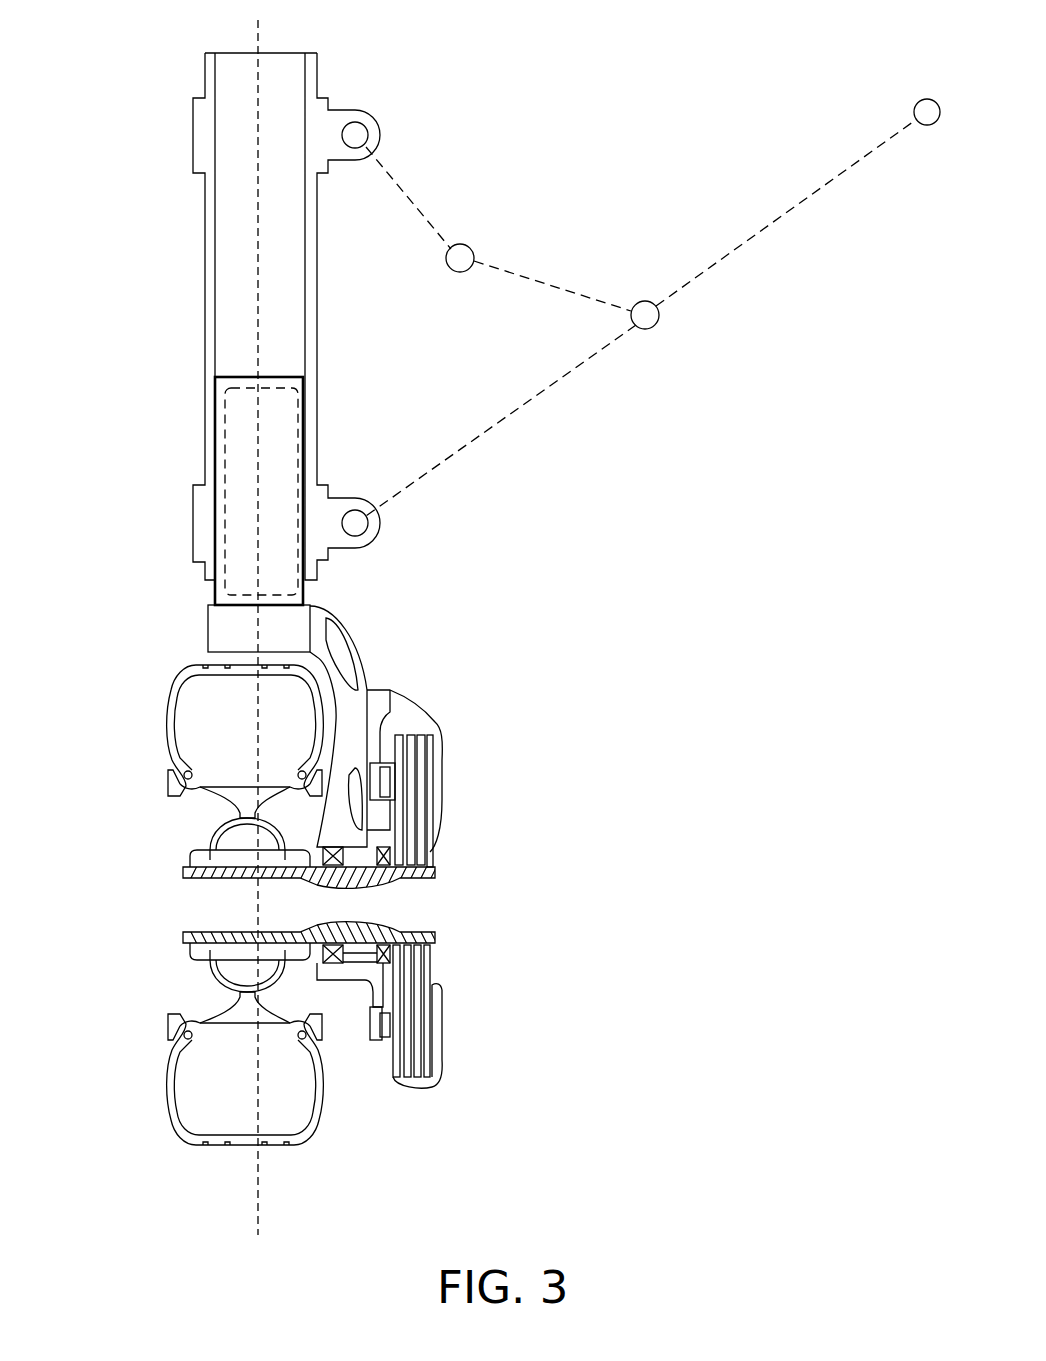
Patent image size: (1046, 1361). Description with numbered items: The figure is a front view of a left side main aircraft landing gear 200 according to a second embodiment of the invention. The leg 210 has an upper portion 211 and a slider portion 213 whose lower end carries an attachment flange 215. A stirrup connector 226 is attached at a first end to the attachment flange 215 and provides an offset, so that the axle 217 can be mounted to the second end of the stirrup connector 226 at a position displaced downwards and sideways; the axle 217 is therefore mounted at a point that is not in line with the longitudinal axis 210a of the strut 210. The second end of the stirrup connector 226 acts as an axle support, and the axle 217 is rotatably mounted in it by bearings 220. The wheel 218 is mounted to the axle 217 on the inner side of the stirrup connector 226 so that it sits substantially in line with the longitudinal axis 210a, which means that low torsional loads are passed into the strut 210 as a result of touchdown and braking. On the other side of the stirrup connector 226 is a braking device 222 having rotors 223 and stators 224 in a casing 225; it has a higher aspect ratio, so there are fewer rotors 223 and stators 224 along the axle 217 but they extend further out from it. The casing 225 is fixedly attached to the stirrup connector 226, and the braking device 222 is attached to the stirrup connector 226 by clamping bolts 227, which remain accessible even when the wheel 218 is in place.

The left side main aircraft landing gear 200 is at (833, 243).
The leg 210 is at (302, 625).
The longitudinal axis 210a is at (258, 33).
The outer cylinder 211 is at (203, 142).
The slider portion 213 is at (213, 595).
The attachment flange 215 is at (212, 633).
The axle 217 is at (210, 902).
The wheel 218 is at (177, 785).
The bearings 220 is at (387, 868).
The braking device 222 is at (488, 751).
The rotors 223 is at (420, 798).
The stators 224 is at (427, 837).
The casing 225 is at (438, 728).
The stirrup connector 226 is at (350, 616).
The clamping bolts 227 is at (387, 720).